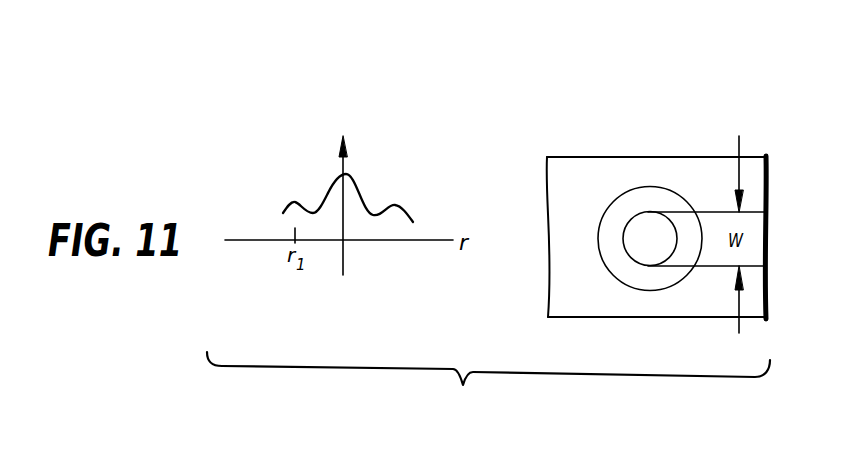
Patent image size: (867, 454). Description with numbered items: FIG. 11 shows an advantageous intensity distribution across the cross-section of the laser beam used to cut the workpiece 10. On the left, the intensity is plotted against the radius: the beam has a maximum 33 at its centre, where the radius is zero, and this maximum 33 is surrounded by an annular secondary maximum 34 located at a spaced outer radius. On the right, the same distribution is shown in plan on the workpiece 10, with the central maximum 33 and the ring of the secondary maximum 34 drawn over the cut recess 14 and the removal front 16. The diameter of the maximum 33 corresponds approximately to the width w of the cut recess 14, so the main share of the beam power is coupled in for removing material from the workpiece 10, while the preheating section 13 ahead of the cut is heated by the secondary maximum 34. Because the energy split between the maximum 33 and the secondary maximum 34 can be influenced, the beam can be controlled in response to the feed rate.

The workpiece 10 is at (571, 177).
The preheating section 13 is at (620, 210).
The cut recess 14 is at (753, 251).
The removal front 16 is at (623, 250).
The maximum 33 is at (350, 177).
The secondary maximum 34 is at (295, 205).